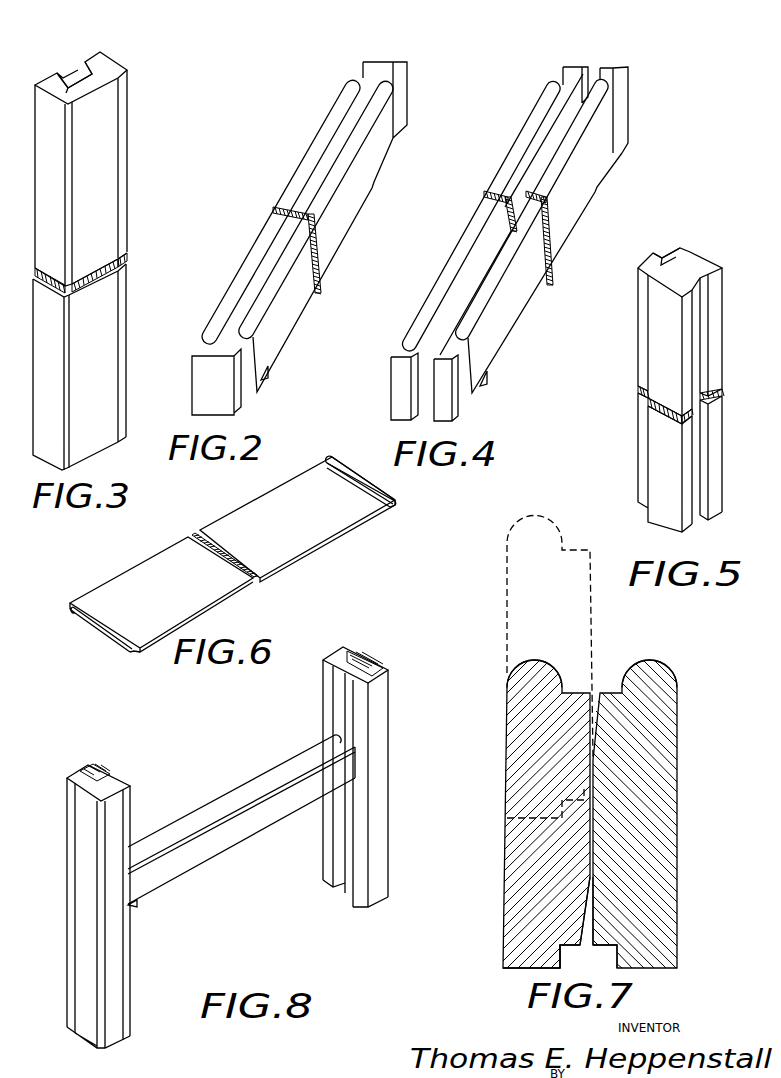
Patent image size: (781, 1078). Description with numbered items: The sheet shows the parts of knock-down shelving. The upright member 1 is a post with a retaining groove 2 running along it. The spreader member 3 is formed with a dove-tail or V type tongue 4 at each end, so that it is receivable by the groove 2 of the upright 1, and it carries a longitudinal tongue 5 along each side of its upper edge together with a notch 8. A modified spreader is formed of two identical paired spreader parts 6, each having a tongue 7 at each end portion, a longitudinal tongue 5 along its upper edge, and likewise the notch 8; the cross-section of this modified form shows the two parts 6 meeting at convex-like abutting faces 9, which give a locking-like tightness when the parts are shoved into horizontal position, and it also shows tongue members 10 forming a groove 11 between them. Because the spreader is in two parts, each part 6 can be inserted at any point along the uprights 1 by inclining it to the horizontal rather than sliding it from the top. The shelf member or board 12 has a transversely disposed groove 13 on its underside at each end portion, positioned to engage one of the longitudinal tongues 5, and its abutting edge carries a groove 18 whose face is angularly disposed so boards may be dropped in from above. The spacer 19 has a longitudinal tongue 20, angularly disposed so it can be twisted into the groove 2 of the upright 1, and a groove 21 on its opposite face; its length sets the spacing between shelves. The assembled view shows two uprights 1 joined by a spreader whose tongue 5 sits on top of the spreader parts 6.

In FIG. 3, the upright member 1 is at (101, 162).
In FIG. 8, the upright member 1 is at (372, 812).
In FIG. 3, the retaining groove 2 is at (64, 78).
In FIG. 8, the retaining groove 2 is at (347, 698).
In FIG. 2, the spreader member 3 is at (336, 219).
In FIG. 2, the tongue 4 is at (398, 93).
In FIG. 2, the longitudinal tongue 5 is at (252, 268).
In FIG. 4, the longitudinal tongue 5 is at (583, 138).
In FIG. 8, the longitudinal tongue 5 is at (192, 820).
In FIG. 7, the longitudinal tongue 5 is at (650, 672).
In FIG. 4, the spreader part 6 is at (561, 217).
In FIG. 8, the spreader part 6 is at (210, 843).
In FIG. 7, the spreader part 6 is at (632, 787).
In FIG. 4, the tongue 7 is at (608, 74).
In FIG. 2, the notch 8 is at (261, 382).
In FIG. 4, the notch 8 is at (598, 185).
In FIG. 7, the convex-like abutting face 9 is at (592, 890).
In FIG. 7, the tongue member 10 is at (637, 960).
In FIG. 7, the groove 11 is at (590, 960).
In FIG. 6, the shelf member 12 is at (287, 540).
In FIG. 6, the transversely disposed groove 13 is at (110, 630).
In FIG. 6, the groove 18 is at (398, 500).
In FIG. 5, the spacer 19 is at (665, 443).
In FIG. 5, the longitudinal tongue 20 is at (650, 277).
In FIG. 5, the groove 21 is at (703, 350).